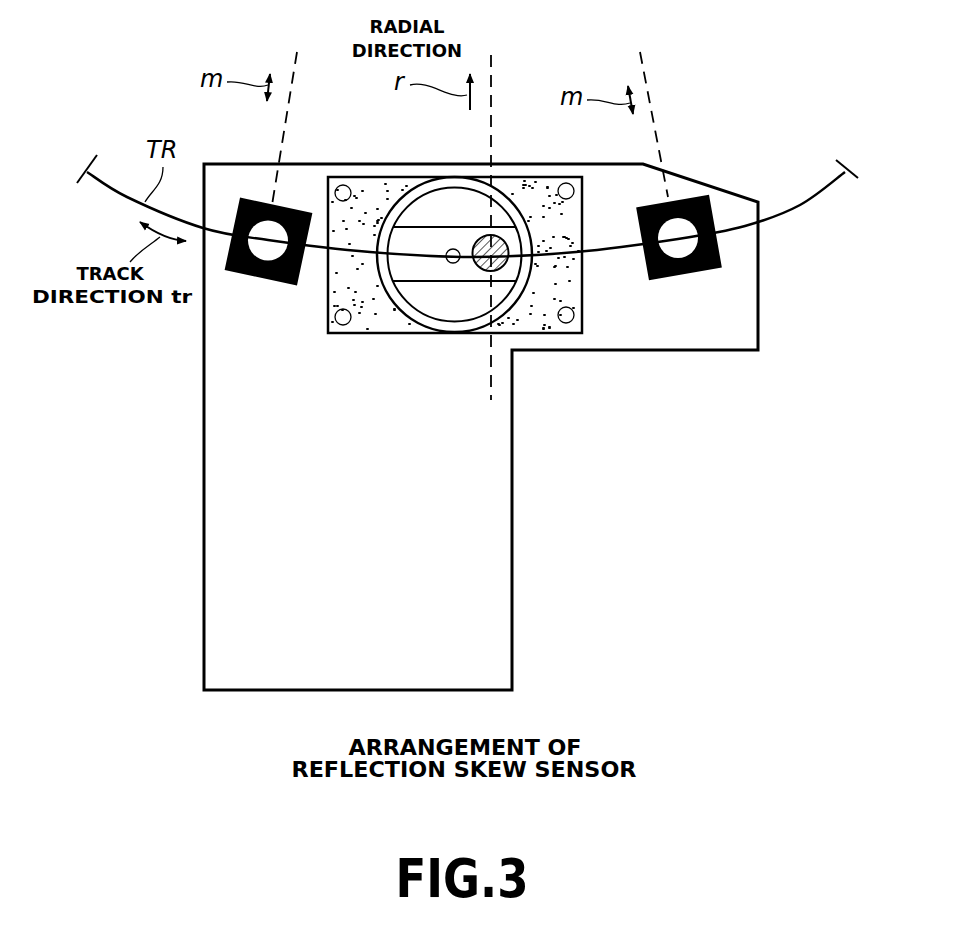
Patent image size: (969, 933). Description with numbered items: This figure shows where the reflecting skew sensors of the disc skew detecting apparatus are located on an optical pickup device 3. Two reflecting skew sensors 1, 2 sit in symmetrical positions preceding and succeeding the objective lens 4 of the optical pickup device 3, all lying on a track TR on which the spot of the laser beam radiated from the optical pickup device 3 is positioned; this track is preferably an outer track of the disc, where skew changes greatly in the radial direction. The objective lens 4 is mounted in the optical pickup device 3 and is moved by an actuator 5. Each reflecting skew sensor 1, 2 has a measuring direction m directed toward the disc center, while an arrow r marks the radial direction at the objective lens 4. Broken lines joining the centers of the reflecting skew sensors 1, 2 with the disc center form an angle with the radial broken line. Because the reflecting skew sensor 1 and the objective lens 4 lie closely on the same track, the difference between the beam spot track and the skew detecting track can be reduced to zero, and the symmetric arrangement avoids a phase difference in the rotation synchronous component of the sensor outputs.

The reflecting skew sensor 1 is at (722, 256).
The reflecting skew sensor 2 is at (243, 273).
The optical pickup device 3 is at (495, 573).
The objective lens 4 is at (502, 265).
The actuator 5 is at (443, 292).